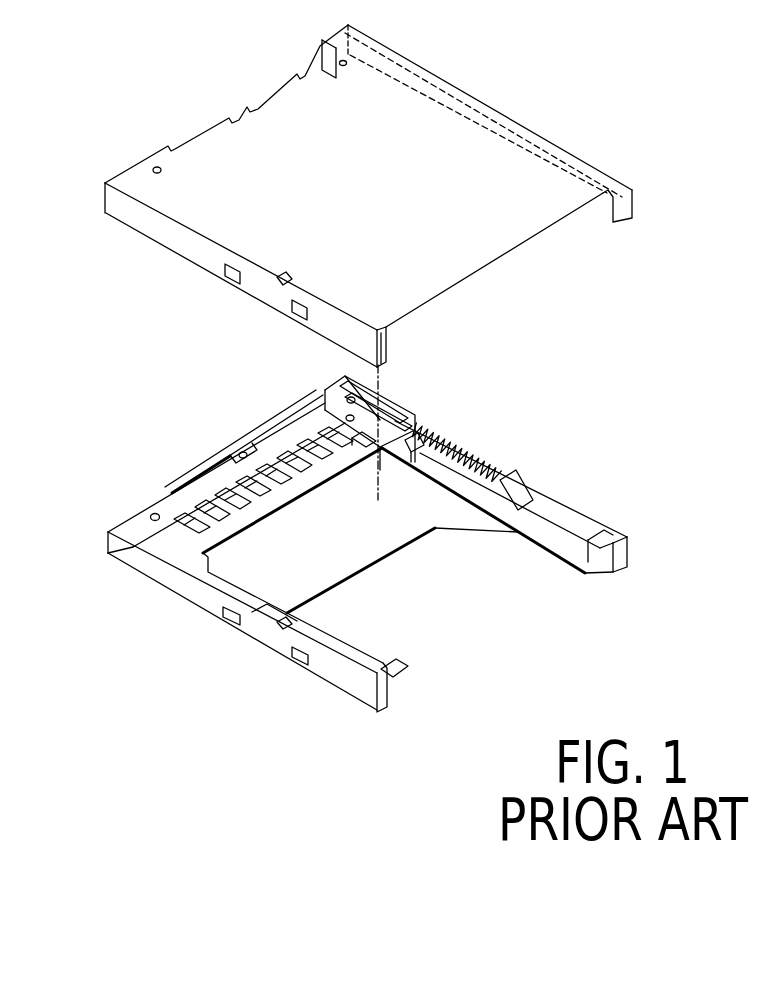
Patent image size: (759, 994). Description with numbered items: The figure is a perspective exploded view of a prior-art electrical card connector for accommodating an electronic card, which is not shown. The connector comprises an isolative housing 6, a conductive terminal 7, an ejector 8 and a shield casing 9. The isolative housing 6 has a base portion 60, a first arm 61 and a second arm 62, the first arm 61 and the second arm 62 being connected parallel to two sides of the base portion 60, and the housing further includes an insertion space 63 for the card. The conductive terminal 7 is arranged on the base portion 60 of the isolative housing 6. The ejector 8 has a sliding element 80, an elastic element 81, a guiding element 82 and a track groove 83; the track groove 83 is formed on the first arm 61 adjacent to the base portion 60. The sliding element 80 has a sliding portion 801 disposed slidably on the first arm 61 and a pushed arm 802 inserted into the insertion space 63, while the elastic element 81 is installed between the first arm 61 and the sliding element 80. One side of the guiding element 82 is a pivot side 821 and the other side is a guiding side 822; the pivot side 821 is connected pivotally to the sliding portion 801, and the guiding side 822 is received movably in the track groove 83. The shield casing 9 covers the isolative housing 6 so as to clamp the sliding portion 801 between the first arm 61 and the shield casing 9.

The isolative housing 6 is at (395, 567).
The base portion 60 is at (168, 507).
The first arm 61 is at (632, 555).
The second arm 62 is at (386, 694).
The insertion space 63 is at (477, 577).
The conductive terminal 7 is at (208, 488).
The ejector 8 is at (381, 430).
The sliding element 80 is at (420, 420).
The elastic element 81 is at (488, 441).
The guiding element 82 is at (339, 392).
The pivot side 821 is at (350, 419).
The guiding side 822 is at (350, 400).
The track groove 83 is at (362, 390).
The sliding portion 801 is at (413, 442).
The pushed arm 802 is at (357, 447).
The shield casing 9 is at (602, 124).